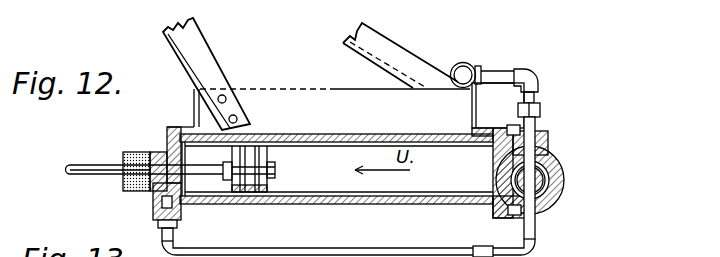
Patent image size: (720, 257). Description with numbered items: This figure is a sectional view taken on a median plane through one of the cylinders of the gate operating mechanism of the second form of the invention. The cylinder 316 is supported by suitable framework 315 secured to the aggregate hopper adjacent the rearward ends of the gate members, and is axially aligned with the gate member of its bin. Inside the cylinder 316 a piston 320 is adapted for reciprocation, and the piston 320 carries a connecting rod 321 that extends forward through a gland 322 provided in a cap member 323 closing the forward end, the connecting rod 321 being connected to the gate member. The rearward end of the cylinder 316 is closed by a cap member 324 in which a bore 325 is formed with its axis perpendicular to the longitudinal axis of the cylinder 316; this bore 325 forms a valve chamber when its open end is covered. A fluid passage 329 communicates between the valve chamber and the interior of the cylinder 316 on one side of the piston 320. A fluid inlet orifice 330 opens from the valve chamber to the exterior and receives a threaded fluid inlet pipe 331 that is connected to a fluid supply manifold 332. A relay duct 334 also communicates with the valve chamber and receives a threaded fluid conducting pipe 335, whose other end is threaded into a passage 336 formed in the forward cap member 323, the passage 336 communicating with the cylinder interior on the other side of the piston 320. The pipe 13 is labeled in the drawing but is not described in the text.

The pipe 13 is at (516, 236).
The framework 315 is at (195, 62).
The cylinder 316 is at (332, 205).
The piston 320 is at (257, 172).
The connecting rod 321 is at (88, 147).
The gland 322 is at (142, 151).
The cap member 323 is at (154, 187).
The cap member 324 is at (556, 163).
The bore 325 is at (563, 180).
The fluid passage 329 is at (500, 183).
The fluid inlet orifice 330 is at (547, 146).
The fluid inlet pipe 331 is at (540, 109).
The fluid supply manifold 332 is at (476, 66).
The relay duct 334 is at (546, 204).
The fluid conducting pipe 335 is at (397, 247).
The passage 336 is at (213, 212).